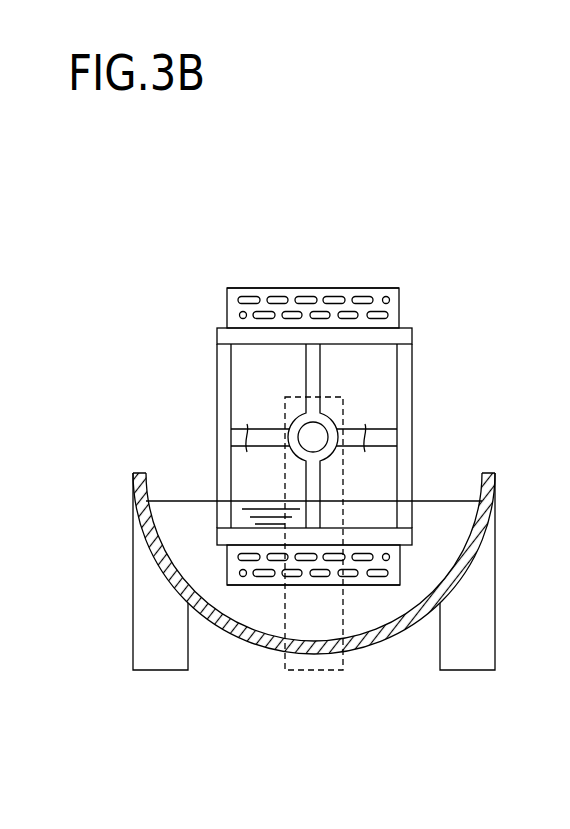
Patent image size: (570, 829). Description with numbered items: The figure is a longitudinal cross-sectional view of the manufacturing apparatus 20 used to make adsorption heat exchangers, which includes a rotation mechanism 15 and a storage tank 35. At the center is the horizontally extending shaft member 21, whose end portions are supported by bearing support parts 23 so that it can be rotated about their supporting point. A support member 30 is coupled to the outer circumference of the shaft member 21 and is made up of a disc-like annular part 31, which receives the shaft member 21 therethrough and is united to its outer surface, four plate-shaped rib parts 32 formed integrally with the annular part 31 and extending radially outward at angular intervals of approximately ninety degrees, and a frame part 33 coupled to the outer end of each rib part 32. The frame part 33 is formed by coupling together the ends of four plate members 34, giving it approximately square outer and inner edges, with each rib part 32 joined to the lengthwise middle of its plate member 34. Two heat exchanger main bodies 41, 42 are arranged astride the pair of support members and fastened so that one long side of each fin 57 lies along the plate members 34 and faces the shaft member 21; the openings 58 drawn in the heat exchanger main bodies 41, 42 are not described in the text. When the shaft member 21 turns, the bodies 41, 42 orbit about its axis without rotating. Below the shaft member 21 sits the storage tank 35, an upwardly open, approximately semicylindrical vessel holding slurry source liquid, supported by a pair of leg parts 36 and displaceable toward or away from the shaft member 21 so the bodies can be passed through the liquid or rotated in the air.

The rotation mechanism 15 is at (422, 313).
The manufacturing apparatus 20 is at (465, 248).
The shaft member 21 is at (305, 438).
The bearing support part 23 is at (343, 413).
The support member 30 is at (205, 365).
The annular part 31 is at (303, 418).
The rib part 32 is at (318, 366).
The frame part 33 is at (413, 447).
The plate member 34 is at (218, 331).
The storage tank 35 is at (362, 652).
The leg part 36 is at (147, 613).
The heat exchanger main body 41 is at (289, 255).
The heat exchanger main body 42 is at (397, 593).
The fin 57 is at (390, 287).
The slots 58 is at (323, 313).